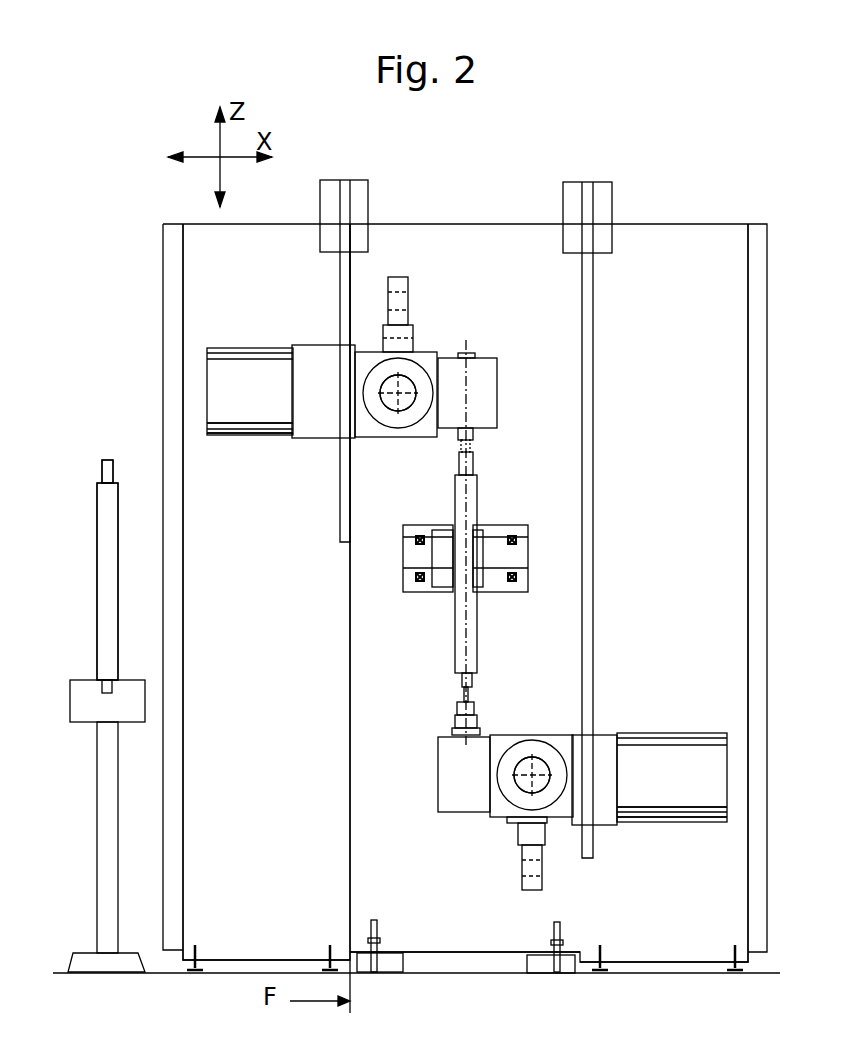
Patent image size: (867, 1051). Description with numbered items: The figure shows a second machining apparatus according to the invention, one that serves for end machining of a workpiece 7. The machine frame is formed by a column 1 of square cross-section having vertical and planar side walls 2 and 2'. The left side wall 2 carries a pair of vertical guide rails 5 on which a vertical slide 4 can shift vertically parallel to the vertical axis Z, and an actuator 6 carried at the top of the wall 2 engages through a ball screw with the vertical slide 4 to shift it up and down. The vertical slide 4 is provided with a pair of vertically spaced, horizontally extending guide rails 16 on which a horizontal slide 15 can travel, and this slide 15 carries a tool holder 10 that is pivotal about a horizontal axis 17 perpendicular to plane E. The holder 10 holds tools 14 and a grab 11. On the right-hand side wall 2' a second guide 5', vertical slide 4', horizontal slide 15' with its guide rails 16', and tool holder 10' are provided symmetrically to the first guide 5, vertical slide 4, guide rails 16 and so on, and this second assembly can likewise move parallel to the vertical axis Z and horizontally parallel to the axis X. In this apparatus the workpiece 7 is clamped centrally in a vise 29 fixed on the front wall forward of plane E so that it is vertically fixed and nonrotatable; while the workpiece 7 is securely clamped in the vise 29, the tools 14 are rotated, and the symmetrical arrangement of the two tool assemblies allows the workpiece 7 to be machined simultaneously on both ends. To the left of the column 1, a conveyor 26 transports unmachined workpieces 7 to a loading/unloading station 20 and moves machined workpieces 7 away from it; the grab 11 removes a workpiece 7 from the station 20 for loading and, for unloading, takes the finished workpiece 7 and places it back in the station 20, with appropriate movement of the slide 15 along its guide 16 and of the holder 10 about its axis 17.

The column 1 is at (514, 197).
The side wall 2 is at (266, 618).
The side wall 2' is at (549, 598).
The vertical slide 4 is at (211, 389).
The vertical slide 4' is at (673, 748).
The vertical guide rails 5 is at (324, 361).
The second guide 5' is at (613, 520).
The actuator 6 is at (353, 197).
The workpiece 7 is at (477, 632).
The tool holder 10 is at (429, 349).
The tool holder 10' is at (509, 749).
The grab 11 is at (410, 288).
The tools 14 is at (472, 445).
The horizontal slide 15 is at (320, 426).
The slide 15' is at (610, 751).
The guide rails 16 is at (250, 465).
The guide rails 16' is at (673, 852).
The horizontal axis 17 is at (398, 402).
The loading/unloading station 20 is at (101, 436).
The conveyor 26 is at (87, 700).
The vise 29 is at (483, 548).